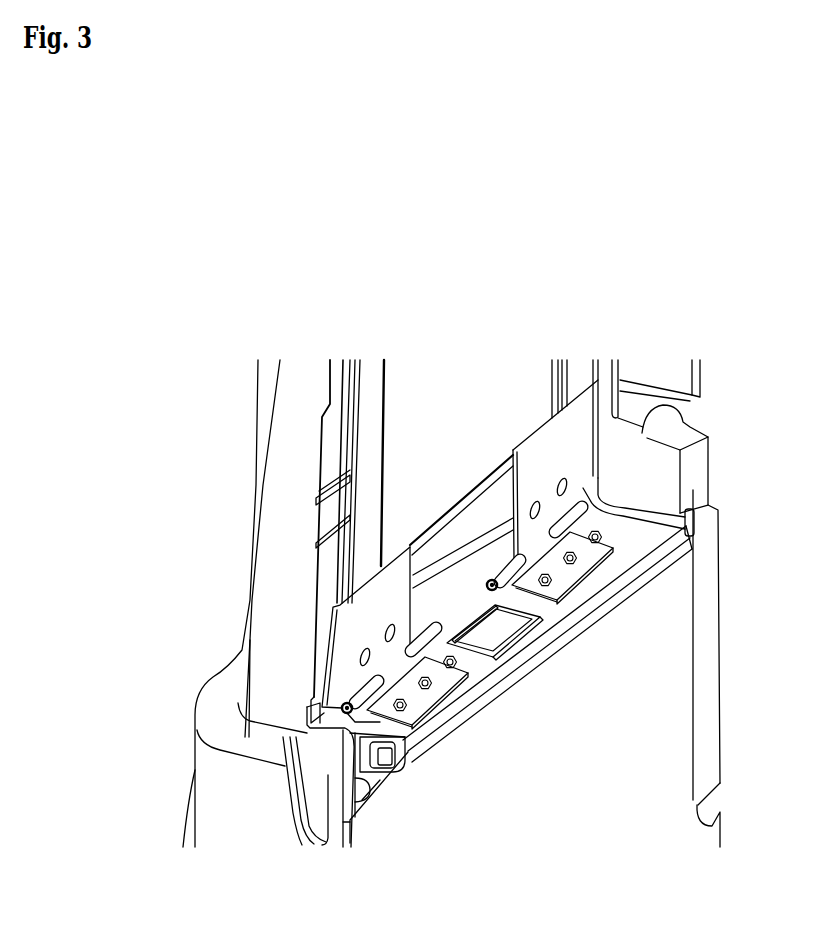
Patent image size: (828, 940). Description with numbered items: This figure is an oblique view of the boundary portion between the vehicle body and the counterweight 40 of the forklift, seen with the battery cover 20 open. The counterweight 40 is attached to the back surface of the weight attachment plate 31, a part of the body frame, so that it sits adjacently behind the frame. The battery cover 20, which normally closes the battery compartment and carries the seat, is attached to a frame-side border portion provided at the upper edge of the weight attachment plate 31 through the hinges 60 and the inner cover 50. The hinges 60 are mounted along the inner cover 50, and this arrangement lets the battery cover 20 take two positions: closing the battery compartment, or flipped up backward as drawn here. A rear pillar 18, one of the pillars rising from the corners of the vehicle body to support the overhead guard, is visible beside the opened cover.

The rear pillar 18 is at (259, 424).
The battery cover 20 is at (275, 582).
The weight attachment plate 31 is at (582, 765).
The counterweight 40 is at (207, 754).
The inner cover 50 is at (540, 633).
The hinge 60 is at (558, 571).